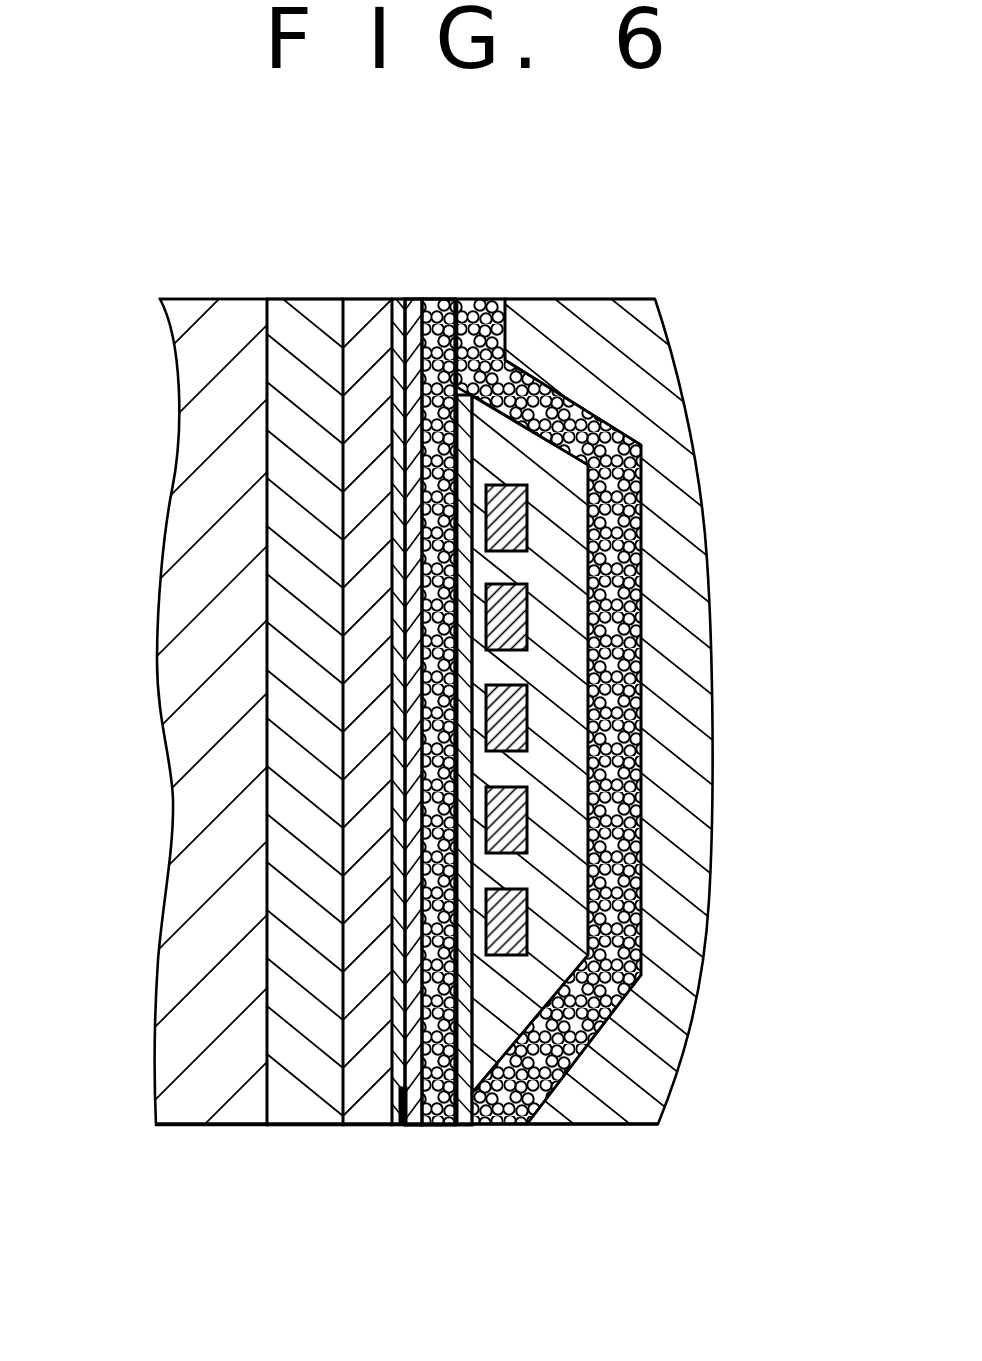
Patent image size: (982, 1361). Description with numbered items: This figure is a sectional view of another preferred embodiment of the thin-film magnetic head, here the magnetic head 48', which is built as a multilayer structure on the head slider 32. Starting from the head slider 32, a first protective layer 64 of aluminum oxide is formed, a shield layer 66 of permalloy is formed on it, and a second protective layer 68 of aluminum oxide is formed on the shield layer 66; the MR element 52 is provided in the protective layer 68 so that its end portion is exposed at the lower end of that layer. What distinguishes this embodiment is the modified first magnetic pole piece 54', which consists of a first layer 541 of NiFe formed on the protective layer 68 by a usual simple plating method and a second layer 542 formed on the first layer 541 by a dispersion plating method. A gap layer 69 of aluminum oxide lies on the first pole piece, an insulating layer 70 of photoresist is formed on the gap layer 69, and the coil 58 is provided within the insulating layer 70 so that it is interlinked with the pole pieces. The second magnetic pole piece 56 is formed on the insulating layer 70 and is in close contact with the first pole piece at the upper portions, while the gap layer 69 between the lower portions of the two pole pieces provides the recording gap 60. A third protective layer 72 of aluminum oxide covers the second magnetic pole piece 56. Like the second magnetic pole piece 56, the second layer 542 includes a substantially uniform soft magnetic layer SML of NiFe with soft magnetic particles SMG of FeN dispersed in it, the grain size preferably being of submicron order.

The head slider 32 is at (192, 781).
The first protective layer 64 is at (295, 842).
The shield layer 66 is at (360, 881).
The second protective layer 68 is at (398, 937).
The first layer 541 is at (413, 1130).
The second layer 542 is at (446, 1140).
The first magnetic pole piece 54' is at (441, 799).
The MR element 52 is at (398, 1129).
The second magnetic pole piece 56 is at (648, 852).
The recording gap 60 is at (467, 1128).
The gap layer 69 is at (464, 760).
The insulating layer 70 is at (570, 775).
The coil 58 is at (527, 607).
The third protective layer 72 is at (698, 717).
The soft magnetic layer SML is at (428, 582).
The soft magnetic particles SMG is at (420, 648).
The magnetic head 48' is at (463, 249).